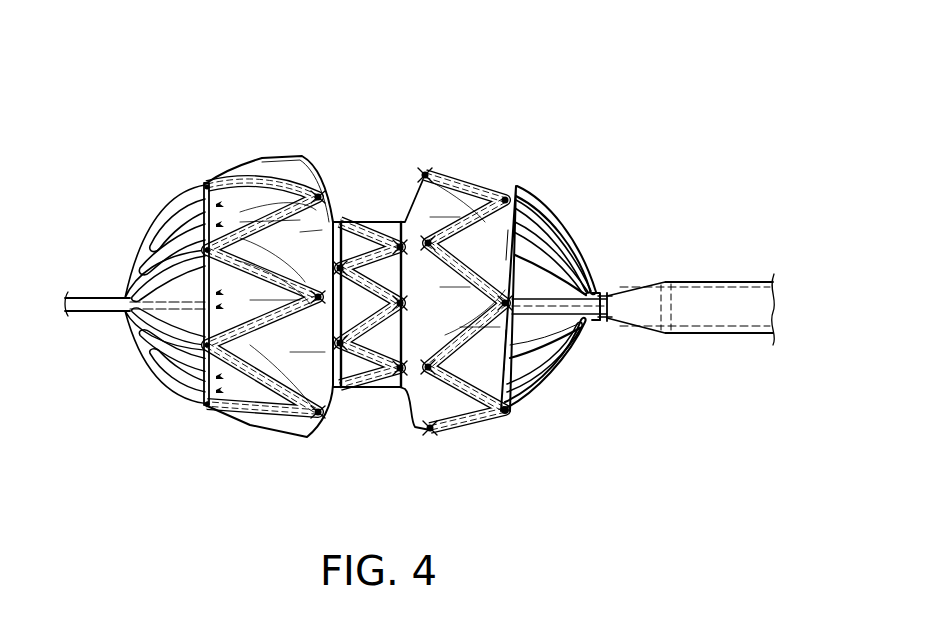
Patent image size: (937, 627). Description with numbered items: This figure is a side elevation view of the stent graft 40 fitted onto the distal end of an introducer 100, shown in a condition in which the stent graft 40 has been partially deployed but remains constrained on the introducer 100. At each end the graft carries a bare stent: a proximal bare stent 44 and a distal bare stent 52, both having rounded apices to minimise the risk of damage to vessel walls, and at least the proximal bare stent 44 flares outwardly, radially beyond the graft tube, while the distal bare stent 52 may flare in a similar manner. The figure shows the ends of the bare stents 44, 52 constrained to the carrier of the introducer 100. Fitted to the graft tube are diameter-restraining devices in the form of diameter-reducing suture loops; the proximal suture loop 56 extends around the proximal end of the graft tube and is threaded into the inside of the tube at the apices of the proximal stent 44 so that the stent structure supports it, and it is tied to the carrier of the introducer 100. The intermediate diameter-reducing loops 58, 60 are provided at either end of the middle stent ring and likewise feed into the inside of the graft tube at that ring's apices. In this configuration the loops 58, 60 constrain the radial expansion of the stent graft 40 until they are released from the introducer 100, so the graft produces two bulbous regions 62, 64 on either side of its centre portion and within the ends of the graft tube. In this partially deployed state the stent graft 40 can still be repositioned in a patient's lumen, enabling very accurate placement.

The stent graft 40 is at (480, 133).
The proximal bare stent 44 is at (547, 230).
The distal bare stent 52 is at (176, 390).
The proximal suture loop 56 is at (503, 413).
The intermediate diameter-reducing loop 58 is at (387, 392).
The intermediate diameter-reducing loop 60 is at (349, 390).
The bulbous region 62 is at (478, 184).
The bulbous region 64 is at (279, 160).
The introducer 100 is at (712, 287).